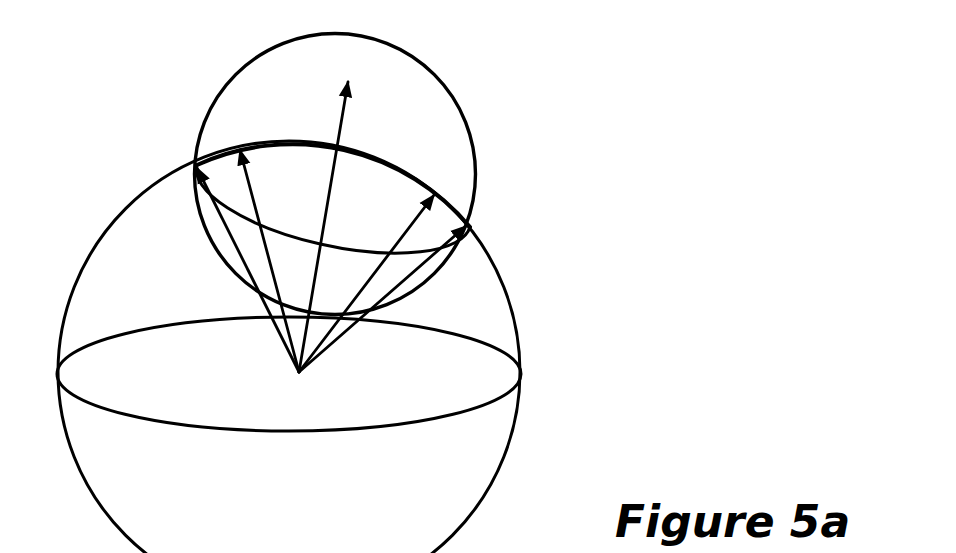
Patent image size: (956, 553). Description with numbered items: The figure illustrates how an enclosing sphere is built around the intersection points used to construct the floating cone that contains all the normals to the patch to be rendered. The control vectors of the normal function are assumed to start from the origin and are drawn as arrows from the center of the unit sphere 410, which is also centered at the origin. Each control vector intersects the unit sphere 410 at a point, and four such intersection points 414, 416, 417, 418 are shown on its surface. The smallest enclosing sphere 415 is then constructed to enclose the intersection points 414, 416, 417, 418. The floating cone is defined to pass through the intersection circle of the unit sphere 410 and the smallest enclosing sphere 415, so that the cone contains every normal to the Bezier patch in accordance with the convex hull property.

The unit sphere 410 is at (518, 313).
The smallest enclosing sphere 415 is at (466, 115).
The intersection point 417 is at (443, 186).
The intersection point 416 is at (469, 223).
The intersection point 414 is at (195, 157).
The intersection point 418 is at (225, 137).